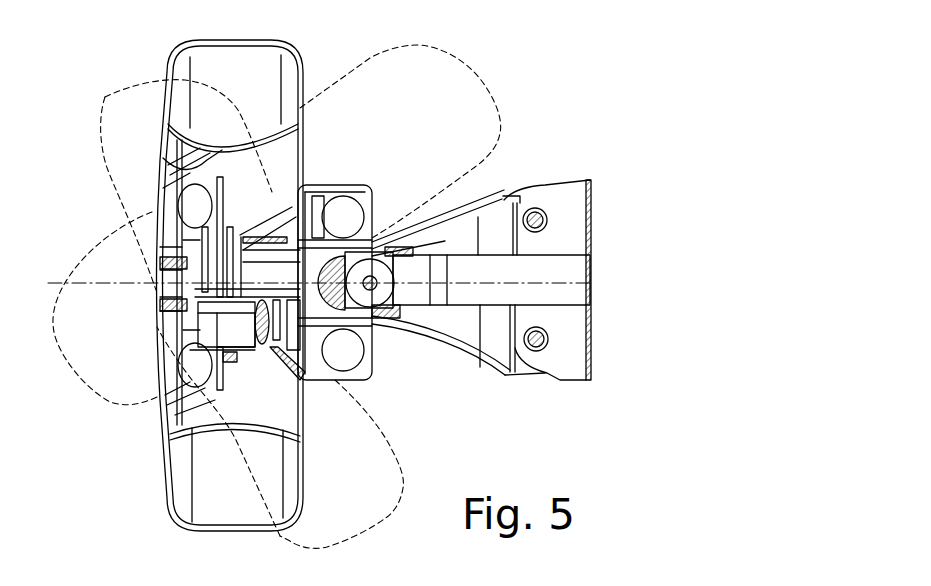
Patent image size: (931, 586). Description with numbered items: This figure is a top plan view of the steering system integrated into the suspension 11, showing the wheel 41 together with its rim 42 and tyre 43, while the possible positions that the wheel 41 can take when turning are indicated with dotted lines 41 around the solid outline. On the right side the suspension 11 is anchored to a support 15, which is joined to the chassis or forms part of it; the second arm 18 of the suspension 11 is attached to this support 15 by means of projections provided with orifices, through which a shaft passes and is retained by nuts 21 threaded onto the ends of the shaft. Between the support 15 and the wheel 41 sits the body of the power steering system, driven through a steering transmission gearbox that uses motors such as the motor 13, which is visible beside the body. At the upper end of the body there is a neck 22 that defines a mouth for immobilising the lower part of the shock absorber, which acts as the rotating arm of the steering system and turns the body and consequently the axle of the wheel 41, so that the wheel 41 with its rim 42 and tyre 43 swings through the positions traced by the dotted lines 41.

The suspension 11 is at (598, 277).
The motor 13 is at (350, 356).
The support 15 is at (593, 186).
The second arm 18 is at (503, 192).
The nuts 21 is at (542, 210).
The neck 22 is at (331, 185).
The wheel 41 is at (104, 97).
The rim 42 is at (172, 445).
The tyre 43 is at (180, 514).